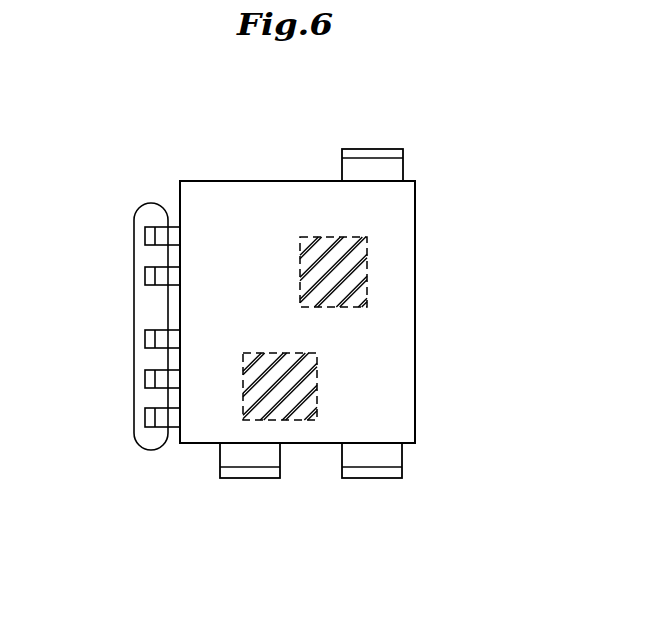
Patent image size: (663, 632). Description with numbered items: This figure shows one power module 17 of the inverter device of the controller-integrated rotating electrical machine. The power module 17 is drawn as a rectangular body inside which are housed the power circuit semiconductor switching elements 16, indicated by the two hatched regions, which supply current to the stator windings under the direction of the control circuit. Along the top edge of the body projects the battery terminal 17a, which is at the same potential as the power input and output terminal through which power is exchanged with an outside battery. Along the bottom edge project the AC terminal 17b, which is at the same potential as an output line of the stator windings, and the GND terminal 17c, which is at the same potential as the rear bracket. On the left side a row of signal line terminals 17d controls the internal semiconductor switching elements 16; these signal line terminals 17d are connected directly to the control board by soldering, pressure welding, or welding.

The power circuit semiconductor switching elements 16 is at (368, 270).
The power module 17 is at (245, 195).
The battery terminal 17a is at (368, 165).
The AC terminal 17b is at (245, 480).
The GND terminal 17c is at (367, 480).
The signal line terminals 17d is at (137, 337).